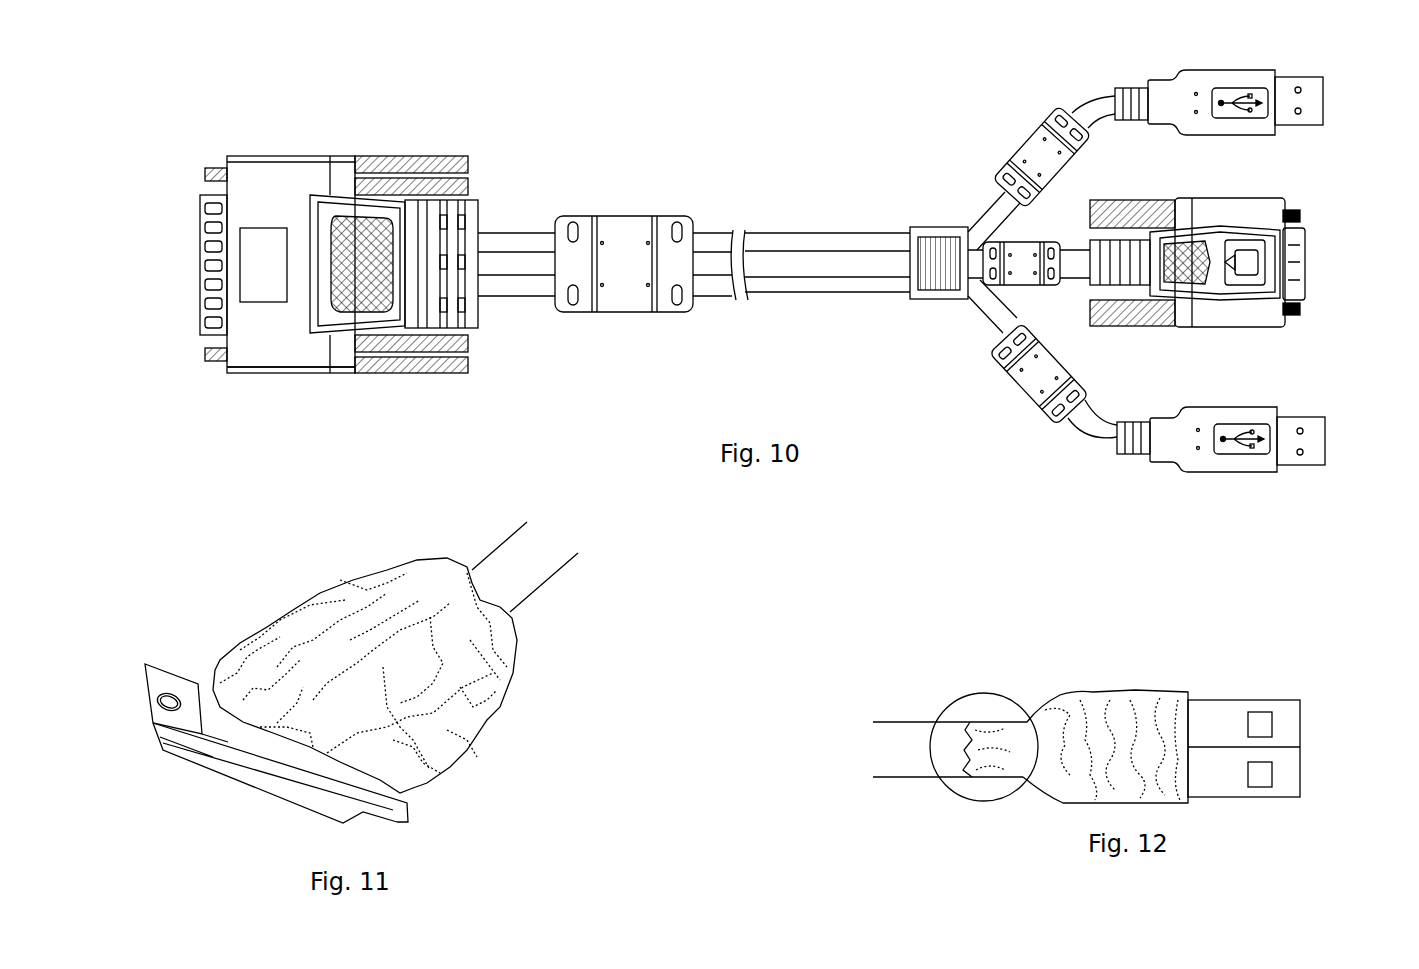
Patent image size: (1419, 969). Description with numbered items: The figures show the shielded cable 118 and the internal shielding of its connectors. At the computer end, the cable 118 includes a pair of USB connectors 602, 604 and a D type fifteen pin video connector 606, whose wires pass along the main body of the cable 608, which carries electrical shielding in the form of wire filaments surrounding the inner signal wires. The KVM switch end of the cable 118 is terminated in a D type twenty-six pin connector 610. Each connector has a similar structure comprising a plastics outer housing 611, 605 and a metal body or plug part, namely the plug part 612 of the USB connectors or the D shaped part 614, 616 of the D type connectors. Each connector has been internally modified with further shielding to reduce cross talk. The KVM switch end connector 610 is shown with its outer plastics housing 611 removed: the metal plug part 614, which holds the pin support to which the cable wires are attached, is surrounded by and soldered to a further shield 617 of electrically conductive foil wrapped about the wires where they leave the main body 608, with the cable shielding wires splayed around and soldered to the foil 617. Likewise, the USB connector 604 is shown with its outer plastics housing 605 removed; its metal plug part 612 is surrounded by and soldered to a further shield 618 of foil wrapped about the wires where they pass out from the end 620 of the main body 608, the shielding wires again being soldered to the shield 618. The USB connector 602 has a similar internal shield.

In FIG. 10, the cable 118 is at (812, 148).
In FIG. 10, the USB connector 602 is at (1235, 68).
In FIG. 10, the USB connector 604 is at (1250, 473).
In FIG. 10, the outer housing 605 is at (1172, 78).
In FIG. 10, the D type 15 pin video connector 606 is at (1255, 198).
In FIG. 10, the main body of the cable 608 is at (720, 232).
In FIG. 10, the KVM switch end connector 610 is at (284, 156).
In FIG. 10, the outer housing 611 is at (287, 355).
In FIG. 10, the plug part 612 is at (1290, 75).
In FIG. 12, the plug part 612 is at (1278, 700).
In FIG. 10, the D shaped part 614 is at (205, 338).
In FIG. 11, the D shaped part 614 is at (213, 778).
In FIG. 10, the D shaped part 616 is at (1308, 232).
In FIG. 11, the further shield 617 is at (493, 713).
In FIG. 12, the further shield 618 is at (1068, 700).
In FIG. 12, the end of the main body of the cable 620 is at (966, 696).